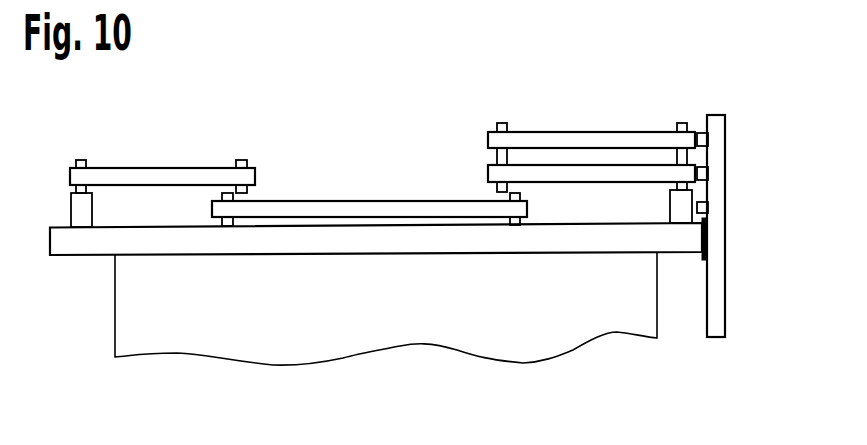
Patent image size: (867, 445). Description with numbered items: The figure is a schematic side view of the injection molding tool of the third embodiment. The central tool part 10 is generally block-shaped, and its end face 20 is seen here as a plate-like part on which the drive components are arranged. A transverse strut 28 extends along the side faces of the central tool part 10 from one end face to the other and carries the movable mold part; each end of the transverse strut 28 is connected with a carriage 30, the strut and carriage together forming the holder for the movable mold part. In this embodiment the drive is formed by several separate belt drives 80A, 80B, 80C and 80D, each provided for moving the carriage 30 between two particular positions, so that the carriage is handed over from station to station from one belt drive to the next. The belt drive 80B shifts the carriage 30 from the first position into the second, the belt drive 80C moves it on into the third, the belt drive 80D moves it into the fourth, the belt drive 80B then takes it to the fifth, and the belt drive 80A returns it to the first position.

The central tool part 10 is at (360, 325).
The end face 20 is at (128, 227).
The transverse strut 28 is at (726, 285).
The carriage 30 is at (700, 260).
The belt drive 80A is at (193, 141).
The belt drive 80B is at (375, 182).
The belt drive 80C is at (608, 196).
The belt drive 80D is at (632, 102).